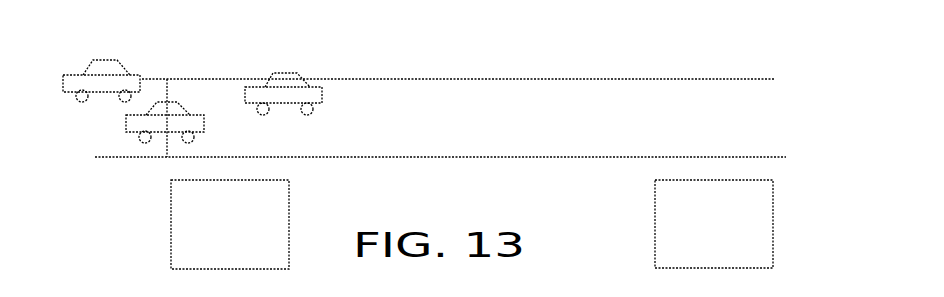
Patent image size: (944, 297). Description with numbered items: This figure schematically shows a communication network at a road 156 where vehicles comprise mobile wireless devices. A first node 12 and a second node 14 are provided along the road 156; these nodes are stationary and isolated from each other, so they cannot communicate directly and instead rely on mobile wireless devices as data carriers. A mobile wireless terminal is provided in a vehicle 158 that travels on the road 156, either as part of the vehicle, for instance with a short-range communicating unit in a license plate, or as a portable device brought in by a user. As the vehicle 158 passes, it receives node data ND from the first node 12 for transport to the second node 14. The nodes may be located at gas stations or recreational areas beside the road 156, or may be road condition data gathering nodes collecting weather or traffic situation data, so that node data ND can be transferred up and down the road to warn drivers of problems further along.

The road 156 is at (355, 79).
The vehicle 158 is at (255, 85).
The node data ND is at (293, 137).
The first node 12 is at (250, 255).
The second node 14 is at (733, 256).